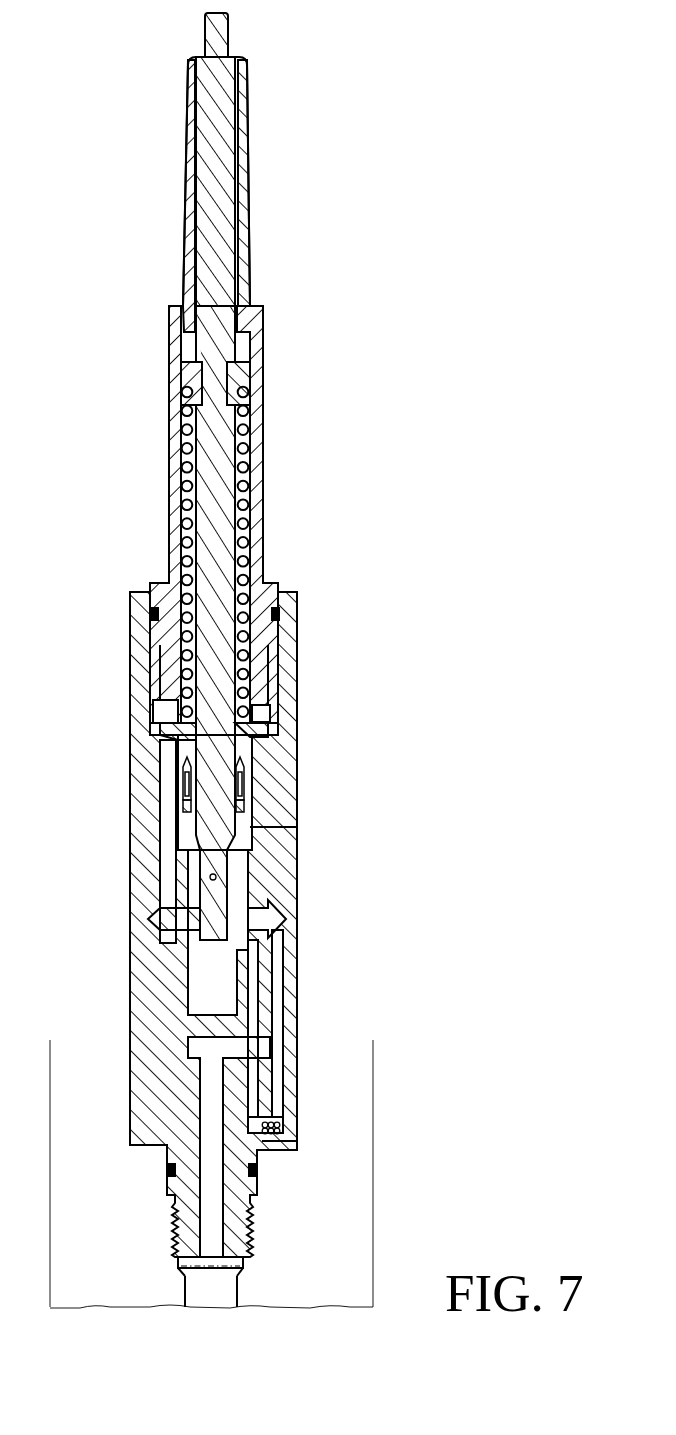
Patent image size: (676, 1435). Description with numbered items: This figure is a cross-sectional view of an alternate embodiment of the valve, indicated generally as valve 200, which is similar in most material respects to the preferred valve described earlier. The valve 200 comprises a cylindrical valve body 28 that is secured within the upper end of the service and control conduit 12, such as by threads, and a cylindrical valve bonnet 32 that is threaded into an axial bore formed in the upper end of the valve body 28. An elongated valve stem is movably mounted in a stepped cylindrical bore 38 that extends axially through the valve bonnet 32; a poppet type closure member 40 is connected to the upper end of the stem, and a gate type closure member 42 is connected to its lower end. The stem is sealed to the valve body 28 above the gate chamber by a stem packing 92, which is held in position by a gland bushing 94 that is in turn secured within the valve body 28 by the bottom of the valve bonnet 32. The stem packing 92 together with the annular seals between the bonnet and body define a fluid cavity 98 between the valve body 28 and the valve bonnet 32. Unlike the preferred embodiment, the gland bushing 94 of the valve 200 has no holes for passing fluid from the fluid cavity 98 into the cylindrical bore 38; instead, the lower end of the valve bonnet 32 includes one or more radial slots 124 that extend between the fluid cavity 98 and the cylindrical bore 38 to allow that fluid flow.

The valve 200 is at (254, 660).
The poppet type closure member 40 is at (246, 54).
The stepped cylindrical bore 38 is at (245, 346).
The valve bonnet 32 is at (265, 474).
The radial slots 124 is at (262, 713).
The fluid cavity 98 is at (262, 740).
The stem packing 92 is at (246, 787).
The valve body 28 is at (299, 798).
The gland bushing 94 is at (178, 730).
The gate type closure member 42 is at (198, 919).
The service and control conduit 12 is at (234, 1301).